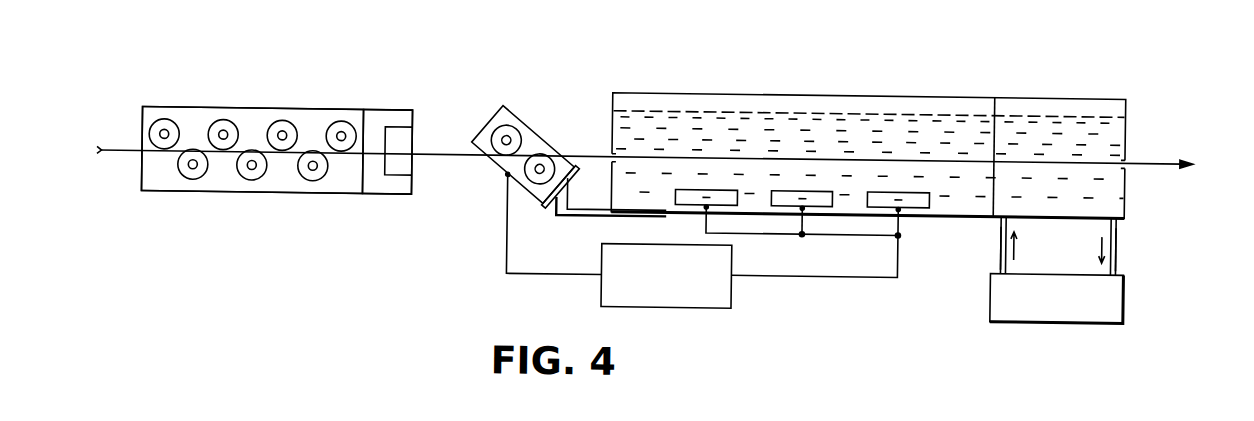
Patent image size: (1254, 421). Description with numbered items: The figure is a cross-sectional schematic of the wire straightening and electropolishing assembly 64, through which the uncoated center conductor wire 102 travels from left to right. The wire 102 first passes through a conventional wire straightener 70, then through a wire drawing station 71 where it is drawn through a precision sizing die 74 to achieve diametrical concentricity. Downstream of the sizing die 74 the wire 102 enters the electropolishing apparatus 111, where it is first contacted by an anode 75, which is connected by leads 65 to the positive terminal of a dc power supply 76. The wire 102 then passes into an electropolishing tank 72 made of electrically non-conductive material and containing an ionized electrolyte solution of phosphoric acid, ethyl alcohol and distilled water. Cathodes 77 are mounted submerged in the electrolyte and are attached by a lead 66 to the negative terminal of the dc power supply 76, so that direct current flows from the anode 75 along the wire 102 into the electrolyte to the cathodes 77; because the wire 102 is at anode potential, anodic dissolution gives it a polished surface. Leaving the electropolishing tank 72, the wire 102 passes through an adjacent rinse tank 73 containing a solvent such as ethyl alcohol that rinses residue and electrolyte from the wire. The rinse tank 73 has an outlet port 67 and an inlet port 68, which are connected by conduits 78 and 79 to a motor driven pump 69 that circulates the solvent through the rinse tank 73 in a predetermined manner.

The assembly 64 is at (270, 70).
The center conductor wire 102 is at (113, 145).
The wire straightener 70 is at (290, 190).
The wire drawing station 71 is at (397, 190).
The sizing die 74 is at (385, 123).
The anode 75 is at (520, 113).
The leads 65 is at (507, 221).
The electropolishing apparatus 111 is at (730, 86).
The electropolishing tank 72 is at (863, 108).
The rinse tank 73 is at (1060, 112).
The cathodes 77 is at (712, 182).
The lead 66 is at (830, 228).
The dc power supply 76 is at (603, 299).
The inlet port 68 is at (1005, 205).
The outlet port 67 is at (1115, 204).
The conduit 78 is at (1001, 228).
The conduit 79 is at (1118, 226).
The pump 69 is at (1125, 281).